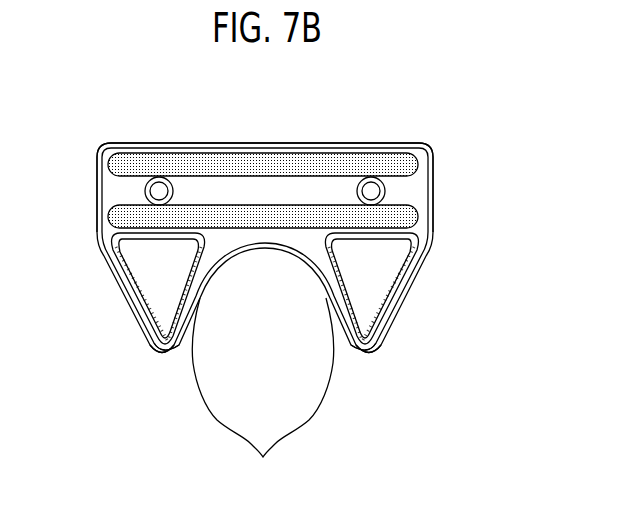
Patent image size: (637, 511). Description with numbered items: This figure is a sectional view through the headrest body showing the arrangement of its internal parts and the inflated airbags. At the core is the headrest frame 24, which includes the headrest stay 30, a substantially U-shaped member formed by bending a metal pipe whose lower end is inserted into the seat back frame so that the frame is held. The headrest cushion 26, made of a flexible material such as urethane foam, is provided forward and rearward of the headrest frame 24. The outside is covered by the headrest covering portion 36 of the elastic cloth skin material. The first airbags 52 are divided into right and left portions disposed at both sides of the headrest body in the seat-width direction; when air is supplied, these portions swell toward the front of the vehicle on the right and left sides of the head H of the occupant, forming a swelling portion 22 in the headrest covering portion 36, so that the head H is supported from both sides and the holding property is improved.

The swelling portion 22 is at (159, 352).
The headrest frame 24 is at (420, 150).
The headrest cushion 26 is at (412, 166).
The headrest stay 30 is at (174, 190).
The headrest covering portion 36 is at (417, 295).
The first airbag 52 is at (130, 325).
The head H is at (302, 416).